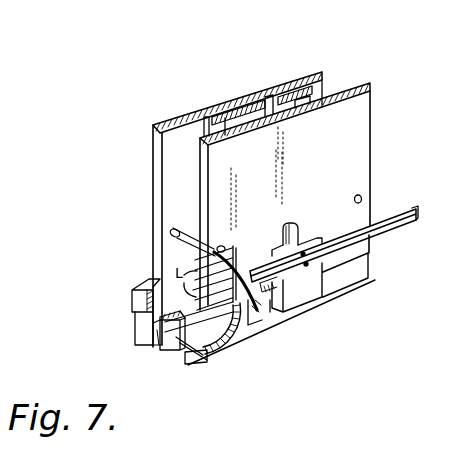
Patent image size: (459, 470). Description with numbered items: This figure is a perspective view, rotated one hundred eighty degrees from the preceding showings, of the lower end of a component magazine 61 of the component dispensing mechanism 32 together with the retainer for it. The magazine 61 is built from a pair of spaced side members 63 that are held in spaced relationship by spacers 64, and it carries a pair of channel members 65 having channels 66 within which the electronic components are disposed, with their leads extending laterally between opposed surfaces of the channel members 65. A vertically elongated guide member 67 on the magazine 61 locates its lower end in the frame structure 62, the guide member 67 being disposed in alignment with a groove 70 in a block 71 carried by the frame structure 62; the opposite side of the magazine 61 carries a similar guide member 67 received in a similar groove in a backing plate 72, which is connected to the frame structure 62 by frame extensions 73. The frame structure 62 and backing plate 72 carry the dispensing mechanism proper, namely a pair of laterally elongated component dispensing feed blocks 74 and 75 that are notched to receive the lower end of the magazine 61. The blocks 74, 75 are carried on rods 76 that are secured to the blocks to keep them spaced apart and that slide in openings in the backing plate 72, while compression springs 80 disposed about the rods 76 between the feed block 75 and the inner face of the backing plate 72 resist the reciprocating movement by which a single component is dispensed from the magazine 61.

The component dispensing mechanism 32 is at (358, 70).
The component magazine 61 is at (178, 112).
The frame structure 62 is at (414, 208).
The side member 63 is at (359, 136).
The spacer 64 is at (182, 230).
The channel member 65 is at (238, 112).
The channel 66 is at (281, 98).
The guide member 67 is at (291, 224).
The groove 70 is at (302, 242).
The block 71 is at (312, 298).
The backing plate 72 is at (144, 338).
The frame extension 73 is at (134, 294).
The component dispensing feed block 74 is at (208, 358).
The component dispensing feed block 75 is at (171, 351).
The rod 76 is at (223, 345).
The compression spring 80 is at (159, 337).